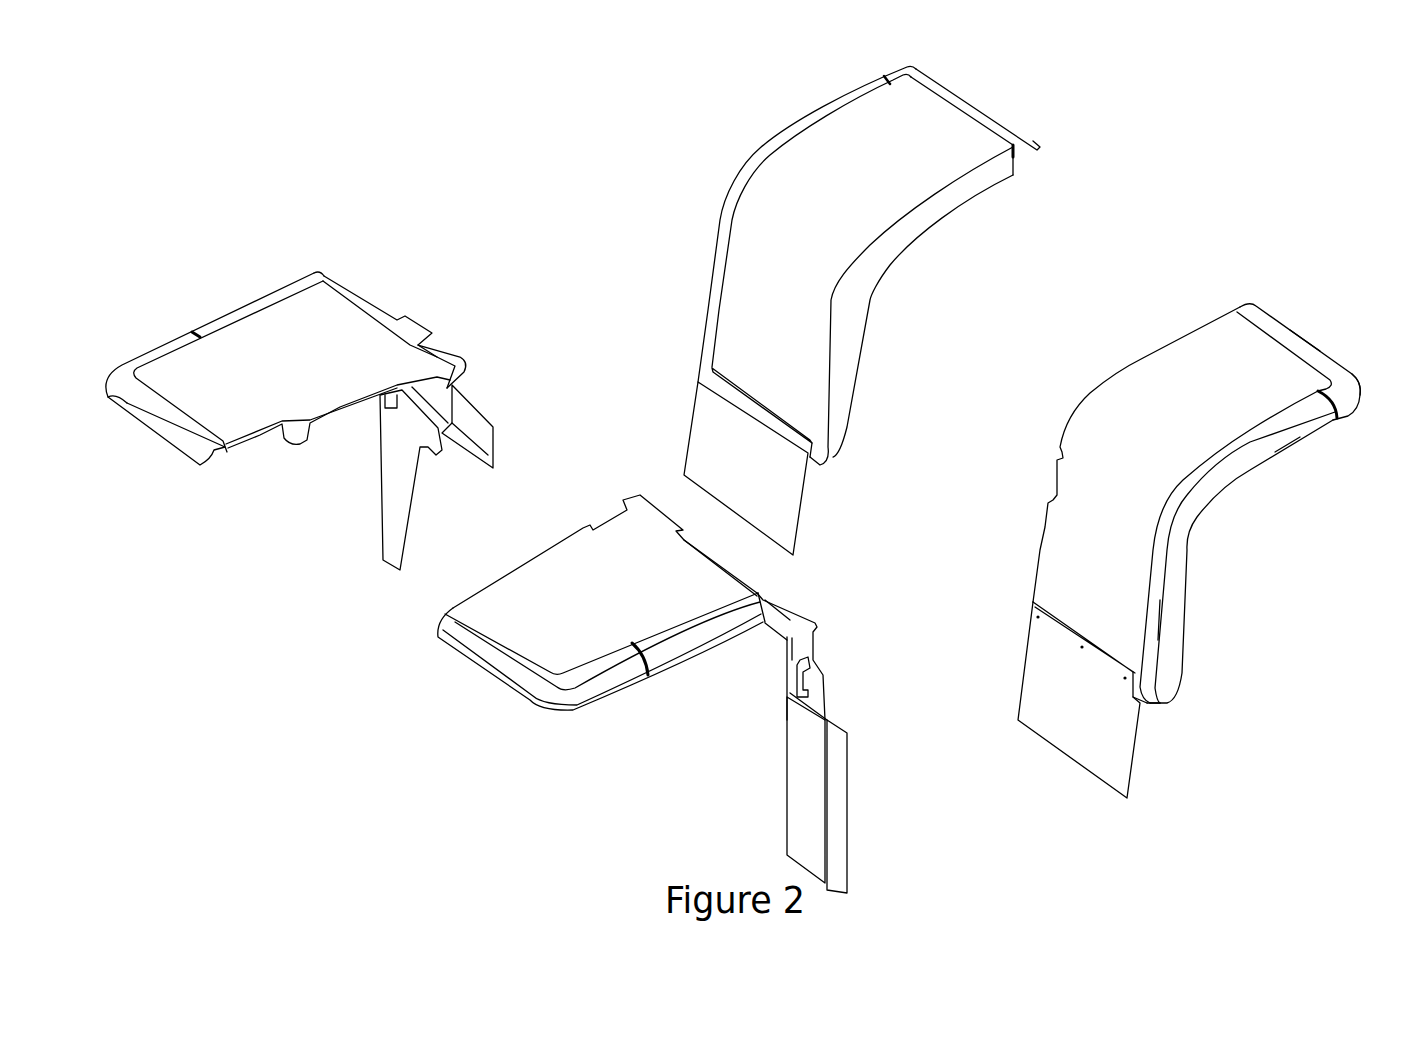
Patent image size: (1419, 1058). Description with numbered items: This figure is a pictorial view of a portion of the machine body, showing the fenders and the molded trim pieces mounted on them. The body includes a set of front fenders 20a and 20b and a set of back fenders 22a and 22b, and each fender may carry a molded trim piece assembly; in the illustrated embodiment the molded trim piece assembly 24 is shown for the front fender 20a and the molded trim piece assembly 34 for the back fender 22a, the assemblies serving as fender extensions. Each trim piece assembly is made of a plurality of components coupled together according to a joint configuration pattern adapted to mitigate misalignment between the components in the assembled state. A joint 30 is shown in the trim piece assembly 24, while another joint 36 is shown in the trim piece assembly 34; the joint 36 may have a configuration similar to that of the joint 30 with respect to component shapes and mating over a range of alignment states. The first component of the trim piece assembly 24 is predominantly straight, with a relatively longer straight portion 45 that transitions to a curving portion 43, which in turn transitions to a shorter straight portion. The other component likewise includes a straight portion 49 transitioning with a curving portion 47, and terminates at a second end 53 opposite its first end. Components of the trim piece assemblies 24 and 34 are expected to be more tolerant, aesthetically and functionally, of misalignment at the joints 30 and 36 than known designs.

The front fender 20a is at (1221, 331).
The front fender 20b is at (982, 133).
The back fender 22a is at (478, 598).
The back fender 22b is at (424, 361).
The molded trim piece assembly 24 is at (848, 95).
The joint 30 is at (1337, 437).
The molded trim piece assembly 34 is at (158, 392).
The joint 36 is at (647, 690).
The curving portion 43 is at (1356, 420).
The straight portion 45 is at (1311, 330).
The curving portion 47 is at (1267, 471).
The straight portion 49 is at (1193, 630).
The second end 53 is at (1164, 712).